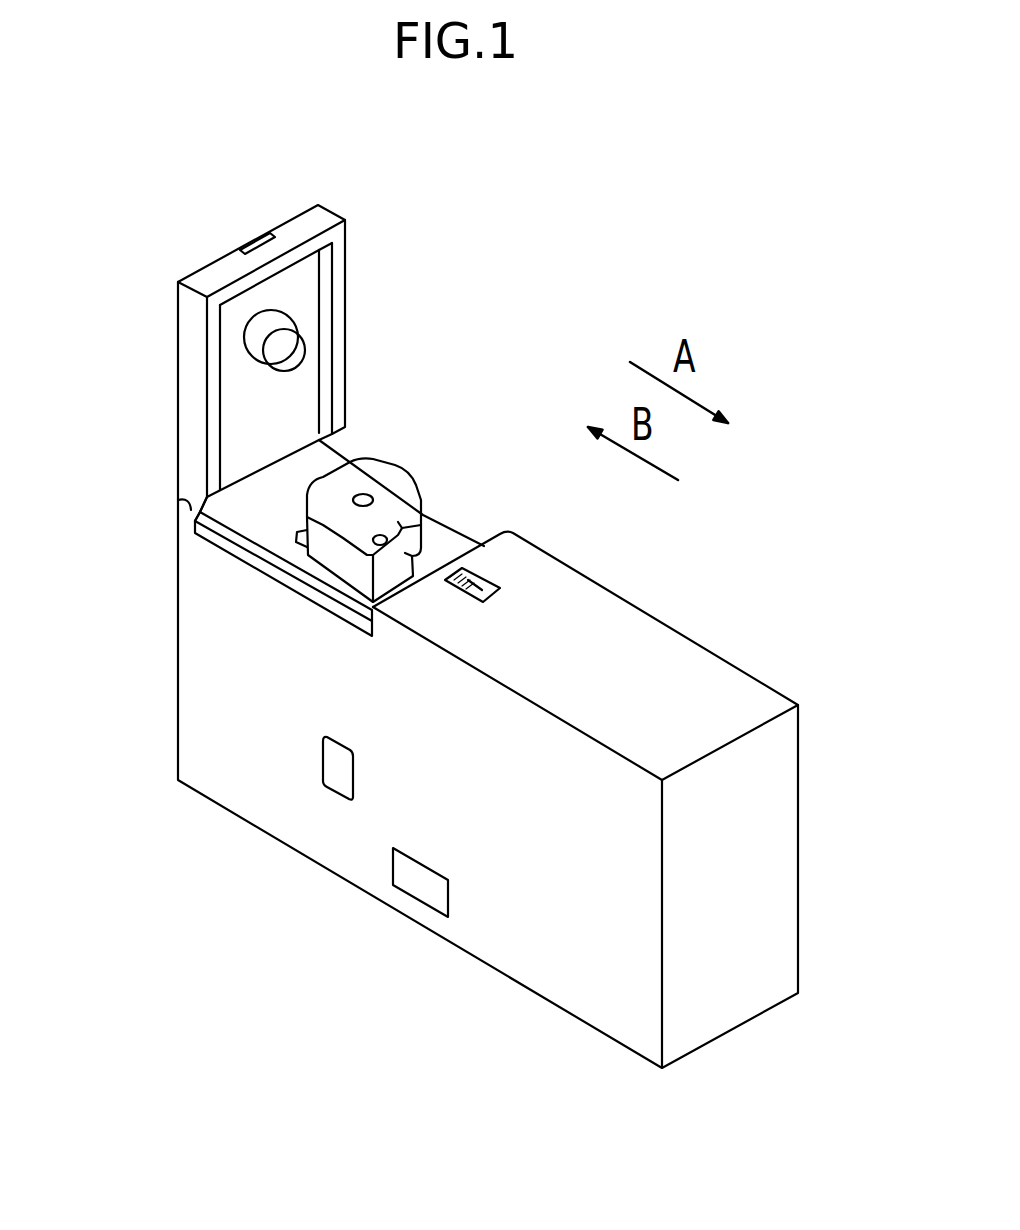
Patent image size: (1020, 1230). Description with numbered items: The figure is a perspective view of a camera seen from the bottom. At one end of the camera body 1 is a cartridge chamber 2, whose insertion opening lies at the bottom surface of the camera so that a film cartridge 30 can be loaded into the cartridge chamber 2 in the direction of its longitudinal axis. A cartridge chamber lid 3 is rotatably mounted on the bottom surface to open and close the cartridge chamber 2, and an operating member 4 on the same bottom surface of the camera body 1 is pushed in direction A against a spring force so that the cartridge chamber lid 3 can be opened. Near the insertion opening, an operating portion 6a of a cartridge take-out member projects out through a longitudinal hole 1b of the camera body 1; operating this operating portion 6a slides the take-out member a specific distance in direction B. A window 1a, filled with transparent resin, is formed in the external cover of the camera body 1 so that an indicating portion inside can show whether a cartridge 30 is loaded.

The camera body 1 is at (800, 806).
The window 1a is at (333, 778).
The longitudinal hole 1b is at (207, 510).
The cartridge chamber 2 is at (295, 542).
The cartridge chamber lid 3 is at (338, 317).
The operating member 4 is at (487, 578).
The operating portion 6a is at (262, 537).
The film cartridge 30 is at (400, 482).